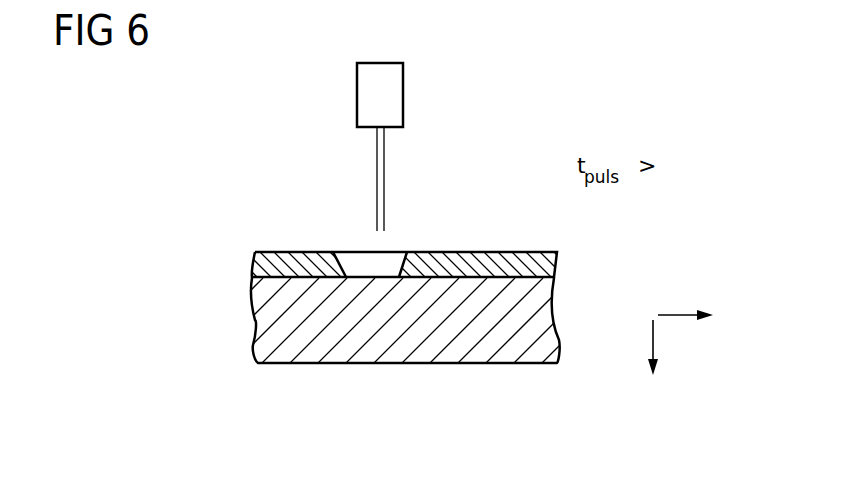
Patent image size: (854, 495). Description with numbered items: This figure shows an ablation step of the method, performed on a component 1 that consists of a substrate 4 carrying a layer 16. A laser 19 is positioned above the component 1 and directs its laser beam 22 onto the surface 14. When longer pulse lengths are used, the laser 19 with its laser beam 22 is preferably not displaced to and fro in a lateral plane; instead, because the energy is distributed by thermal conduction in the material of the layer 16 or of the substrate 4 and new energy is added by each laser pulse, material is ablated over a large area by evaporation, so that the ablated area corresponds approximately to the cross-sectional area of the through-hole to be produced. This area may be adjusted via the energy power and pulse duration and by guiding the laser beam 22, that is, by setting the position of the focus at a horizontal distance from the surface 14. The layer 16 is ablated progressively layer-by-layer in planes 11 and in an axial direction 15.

The component 1 is at (393, 277).
The substrate 4 is at (545, 330).
The planes 11 is at (673, 313).
The surface 14 is at (508, 251).
The axial direction 15 is at (655, 335).
The layer 16 is at (435, 228).
The laser 19 is at (393, 97).
The laser beam 22 is at (377, 178).